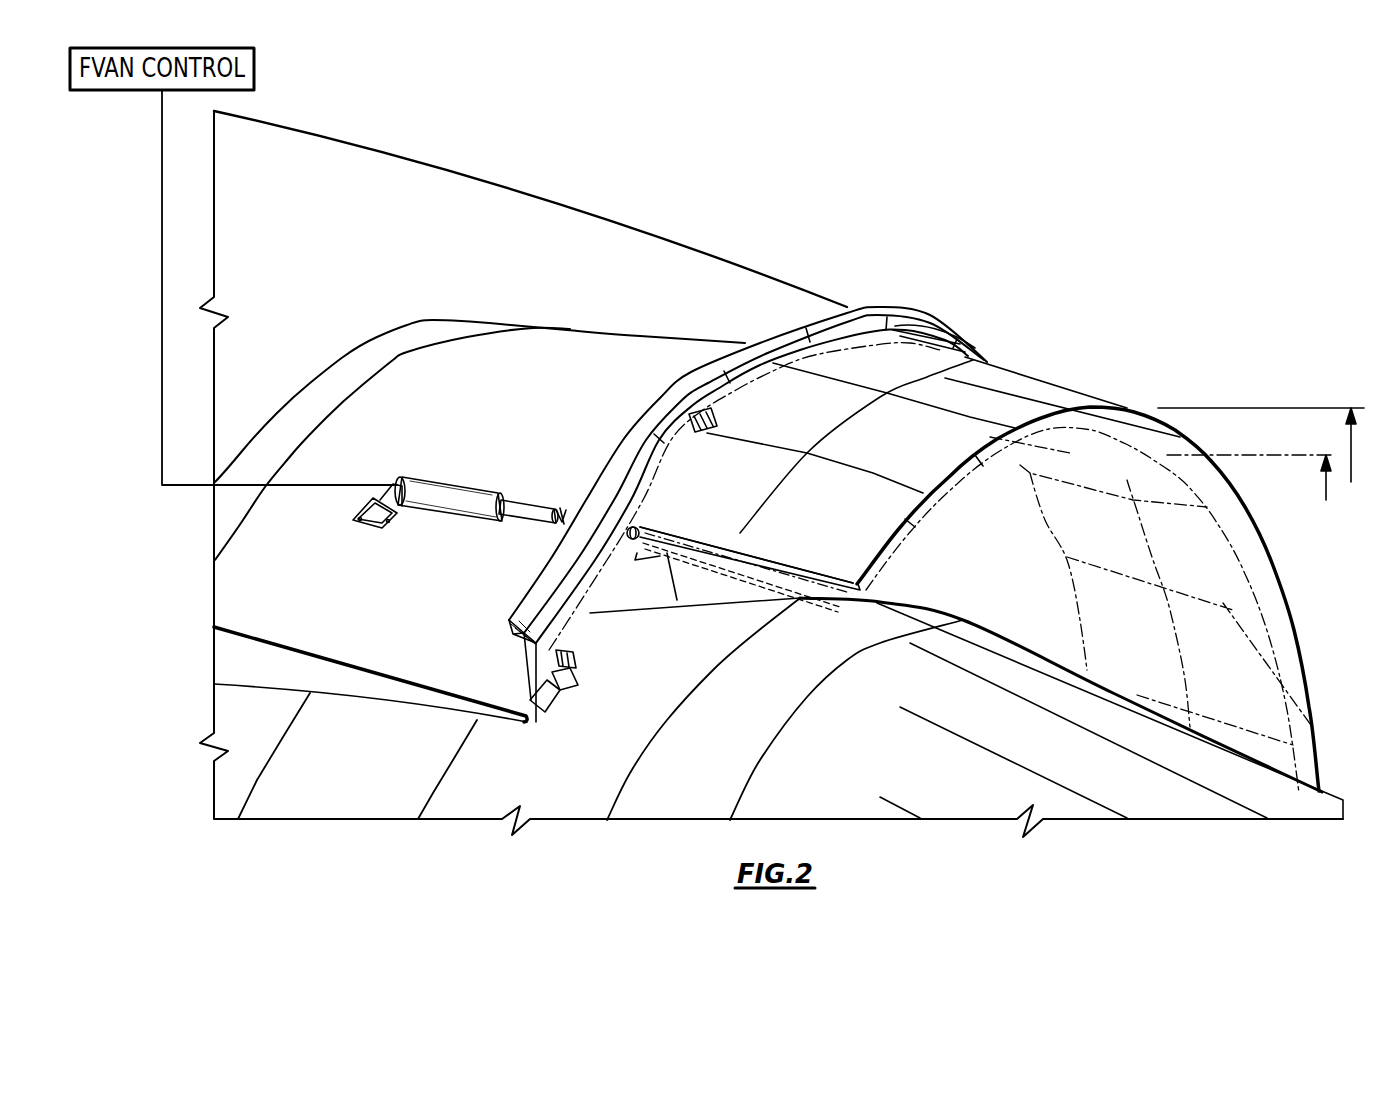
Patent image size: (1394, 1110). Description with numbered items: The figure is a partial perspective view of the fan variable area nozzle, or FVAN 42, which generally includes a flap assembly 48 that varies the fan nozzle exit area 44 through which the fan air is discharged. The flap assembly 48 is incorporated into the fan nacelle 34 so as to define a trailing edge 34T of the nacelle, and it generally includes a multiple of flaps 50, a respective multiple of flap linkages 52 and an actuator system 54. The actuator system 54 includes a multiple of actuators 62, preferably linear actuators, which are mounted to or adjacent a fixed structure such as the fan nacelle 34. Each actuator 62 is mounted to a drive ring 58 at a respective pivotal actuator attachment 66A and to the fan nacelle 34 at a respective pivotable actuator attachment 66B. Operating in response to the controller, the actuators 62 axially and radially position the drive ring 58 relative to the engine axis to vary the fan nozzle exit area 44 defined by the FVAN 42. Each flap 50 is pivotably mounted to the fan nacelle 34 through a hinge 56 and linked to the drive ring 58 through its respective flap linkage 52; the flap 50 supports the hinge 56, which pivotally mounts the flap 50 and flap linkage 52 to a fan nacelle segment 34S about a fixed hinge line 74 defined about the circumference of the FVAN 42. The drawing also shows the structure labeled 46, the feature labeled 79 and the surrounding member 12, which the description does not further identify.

The pylon 12 is at (1080, 776).
The fan nacelle 34 is at (573, 277).
The fan nacelle segment 34S is at (527, 705).
The trailing edge 34T is at (890, 572).
The FVAN 42 is at (830, 632).
The fan nozzle exit area 44 is at (1351, 482).
The core nacelle 46 is at (403, 667).
The flap assembly 48 is at (700, 550).
The flap 50 is at (863, 383).
The flap linkage 52 is at (705, 425).
The actuator system 54 is at (524, 481).
The hinge 56 is at (637, 550).
The drive ring 58 is at (713, 372).
The actuator 62 is at (437, 488).
The pivotal actuator attachment 66A is at (571, 502).
The pivotable actuator attachment 66B is at (398, 513).
The hinge line 74 is at (645, 530).
The seal 79 is at (572, 690).